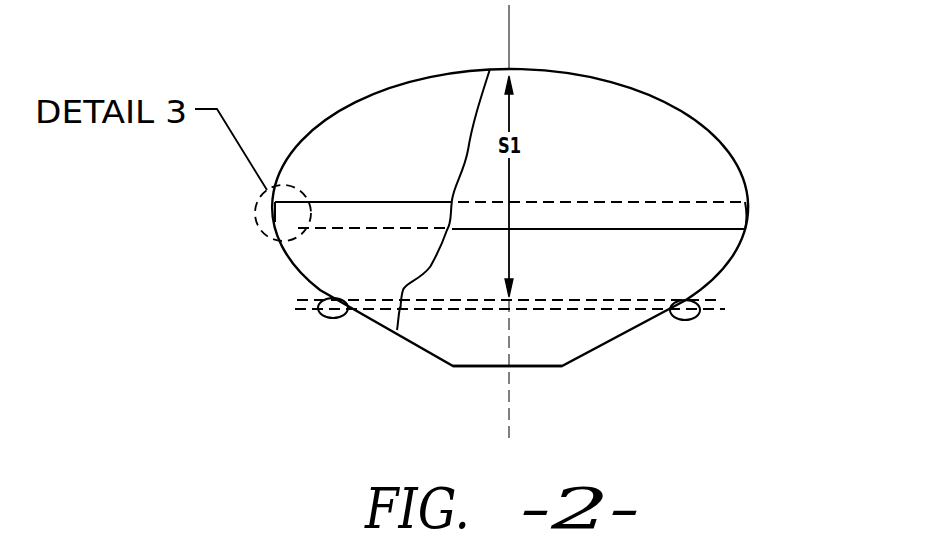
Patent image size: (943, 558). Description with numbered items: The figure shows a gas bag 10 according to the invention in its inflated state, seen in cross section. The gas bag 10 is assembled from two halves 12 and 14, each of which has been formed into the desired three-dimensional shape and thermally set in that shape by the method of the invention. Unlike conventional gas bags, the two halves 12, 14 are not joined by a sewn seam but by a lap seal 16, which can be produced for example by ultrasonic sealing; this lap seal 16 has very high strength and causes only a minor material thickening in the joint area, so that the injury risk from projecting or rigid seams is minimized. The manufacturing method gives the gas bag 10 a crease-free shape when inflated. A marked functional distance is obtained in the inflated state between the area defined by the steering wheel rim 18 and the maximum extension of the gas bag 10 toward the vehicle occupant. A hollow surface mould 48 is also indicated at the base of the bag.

The gas bag 10 is at (732, 108).
The half of the gas bag 12 is at (717, 175).
The half of the gas bag 14 is at (716, 252).
The lap seal 16 is at (262, 212).
The steering wheel rim 18 is at (685, 313).
The hollow surface mould 48 is at (453, 366).